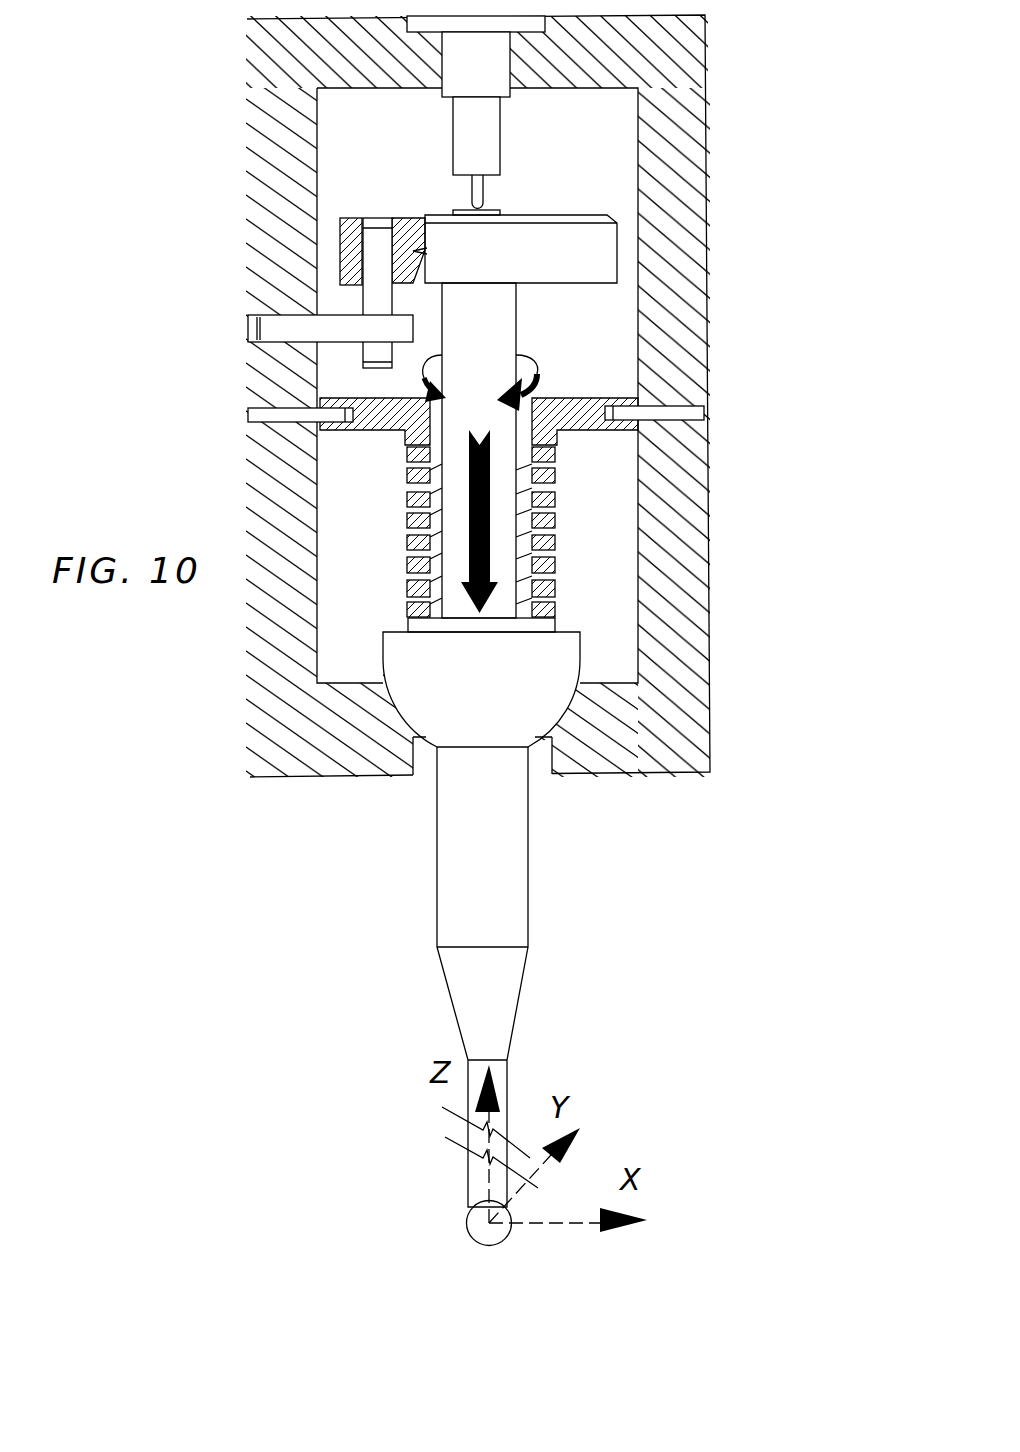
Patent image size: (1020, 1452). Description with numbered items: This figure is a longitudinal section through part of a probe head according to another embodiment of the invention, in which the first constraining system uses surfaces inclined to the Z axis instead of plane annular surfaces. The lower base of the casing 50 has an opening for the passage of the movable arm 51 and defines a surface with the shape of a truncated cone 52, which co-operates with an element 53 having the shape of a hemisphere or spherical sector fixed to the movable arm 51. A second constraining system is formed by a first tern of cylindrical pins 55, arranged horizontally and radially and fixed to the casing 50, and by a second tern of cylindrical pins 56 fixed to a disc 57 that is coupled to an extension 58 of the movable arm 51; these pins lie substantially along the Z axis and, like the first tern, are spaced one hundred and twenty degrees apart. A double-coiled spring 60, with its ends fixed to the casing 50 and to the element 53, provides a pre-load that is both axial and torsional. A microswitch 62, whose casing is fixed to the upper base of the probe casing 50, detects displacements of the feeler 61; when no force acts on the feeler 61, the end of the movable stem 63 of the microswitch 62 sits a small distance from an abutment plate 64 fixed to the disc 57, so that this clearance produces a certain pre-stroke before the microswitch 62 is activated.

The casing 50 is at (695, 627).
The movable arm 51 is at (512, 925).
The surface with the shape of a truncated cone 52 is at (403, 712).
The element having the shape of a hemisphere or of a spherical sector 53 is at (518, 717).
The first tern of cylindrical pins 55 is at (273, 325).
The second tern of cylindrical pins 56 is at (377, 305).
The disc 57 is at (590, 248).
The extension of movable arm 58 is at (487, 325).
The double-coiled spring 60 is at (553, 472).
The feeler 61 is at (503, 1227).
The microswitch 62 is at (492, 142).
The movable stem 63 is at (480, 195).
The abutment plate 64 is at (457, 213).